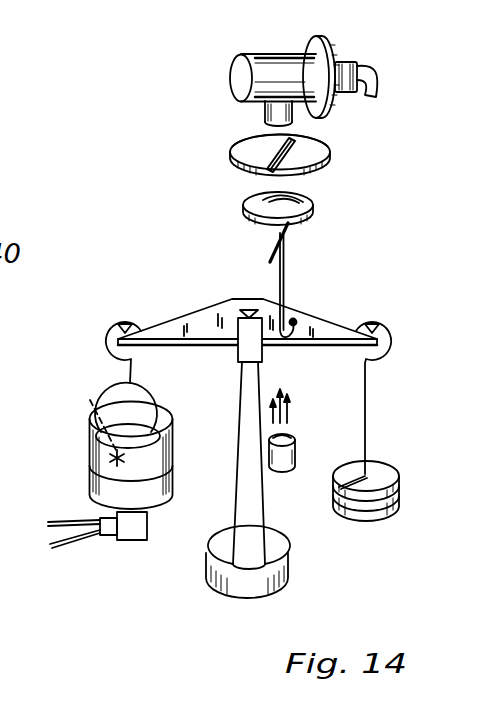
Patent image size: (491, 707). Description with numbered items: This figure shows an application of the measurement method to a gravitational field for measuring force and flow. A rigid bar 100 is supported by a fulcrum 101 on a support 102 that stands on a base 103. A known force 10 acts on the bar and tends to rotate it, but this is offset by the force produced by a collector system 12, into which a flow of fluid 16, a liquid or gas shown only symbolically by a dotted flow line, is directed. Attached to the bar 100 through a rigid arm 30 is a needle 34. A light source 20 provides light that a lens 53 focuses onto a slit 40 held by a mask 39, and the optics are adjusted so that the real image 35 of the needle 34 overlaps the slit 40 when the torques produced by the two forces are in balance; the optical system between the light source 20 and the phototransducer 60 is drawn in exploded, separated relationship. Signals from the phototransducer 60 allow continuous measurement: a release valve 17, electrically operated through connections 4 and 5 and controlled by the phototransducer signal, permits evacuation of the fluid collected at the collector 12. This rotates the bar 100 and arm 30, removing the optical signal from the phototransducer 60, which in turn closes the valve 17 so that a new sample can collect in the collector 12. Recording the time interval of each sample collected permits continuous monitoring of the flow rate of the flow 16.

The phototransducer 60 is at (263, 53).
The slit 40 is at (298, 150).
The mask 39 is at (318, 162).
The real image 35 is at (266, 156).
The lens 53 is at (313, 205).
The needle 34 is at (290, 233).
The rigid arm 30 is at (285, 290).
The rigid bar 100 is at (195, 318).
The fulcrum 101 is at (250, 323).
The support 102 is at (243, 511).
The base 103 is at (210, 575).
The light source 20 is at (300, 446).
The known force 10 is at (385, 470).
The flow of fluid 16 is at (78, 404).
The collector system 12 is at (90, 483).
The connection 4 is at (57, 522).
The connection 5 is at (57, 548).
The release valve 17 is at (108, 543).